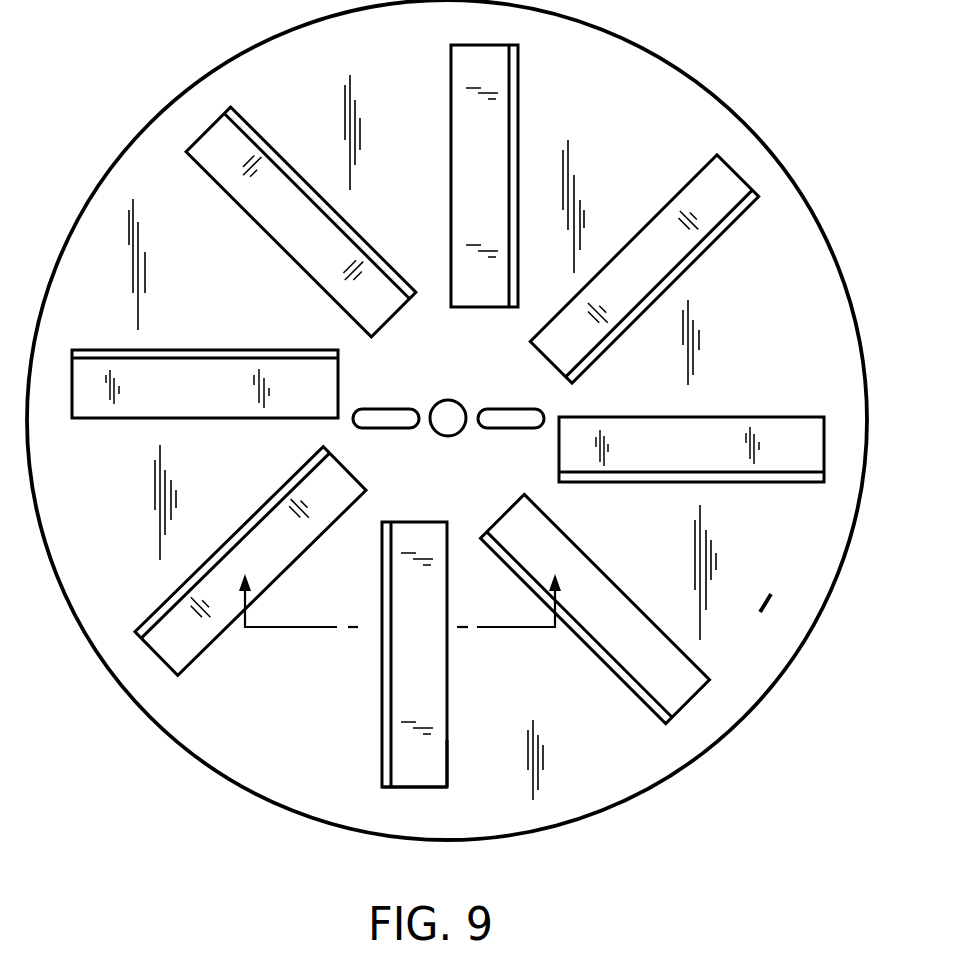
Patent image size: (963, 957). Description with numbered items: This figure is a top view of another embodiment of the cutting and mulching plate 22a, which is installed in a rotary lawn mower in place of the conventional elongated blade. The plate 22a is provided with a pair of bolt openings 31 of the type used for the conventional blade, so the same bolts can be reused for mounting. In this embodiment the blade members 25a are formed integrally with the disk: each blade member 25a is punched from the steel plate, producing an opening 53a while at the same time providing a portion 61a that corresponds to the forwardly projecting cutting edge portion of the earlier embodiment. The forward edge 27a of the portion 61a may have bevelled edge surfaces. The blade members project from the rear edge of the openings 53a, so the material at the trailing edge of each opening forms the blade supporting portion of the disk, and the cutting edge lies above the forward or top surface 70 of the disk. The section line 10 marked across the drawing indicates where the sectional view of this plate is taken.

The plate 22a is at (694, 66).
The top surface of disk 70 is at (747, 628).
The bolt openings 31 is at (400, 408).
The section line 10 is at (402, 589).
The blade members 25a is at (424, 680).
The forward edge 27a is at (381, 697).
The openings 53a is at (382, 771).
The portion of blade member 61a is at (428, 773).